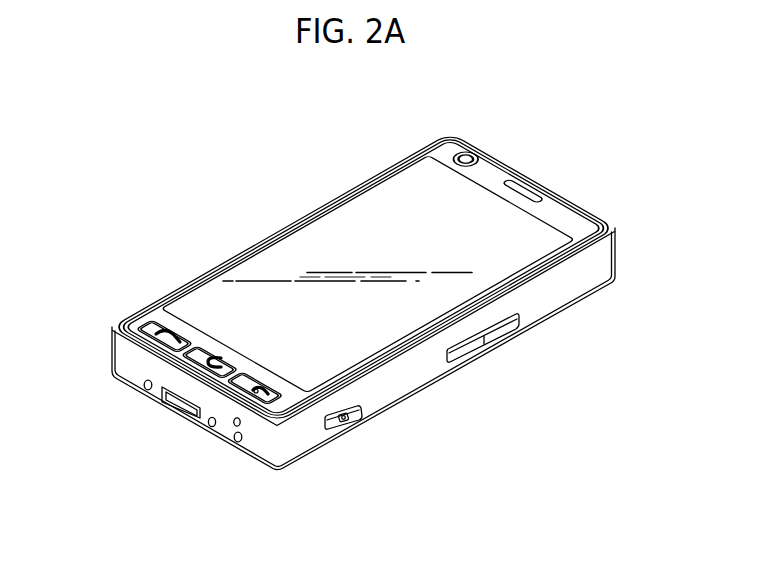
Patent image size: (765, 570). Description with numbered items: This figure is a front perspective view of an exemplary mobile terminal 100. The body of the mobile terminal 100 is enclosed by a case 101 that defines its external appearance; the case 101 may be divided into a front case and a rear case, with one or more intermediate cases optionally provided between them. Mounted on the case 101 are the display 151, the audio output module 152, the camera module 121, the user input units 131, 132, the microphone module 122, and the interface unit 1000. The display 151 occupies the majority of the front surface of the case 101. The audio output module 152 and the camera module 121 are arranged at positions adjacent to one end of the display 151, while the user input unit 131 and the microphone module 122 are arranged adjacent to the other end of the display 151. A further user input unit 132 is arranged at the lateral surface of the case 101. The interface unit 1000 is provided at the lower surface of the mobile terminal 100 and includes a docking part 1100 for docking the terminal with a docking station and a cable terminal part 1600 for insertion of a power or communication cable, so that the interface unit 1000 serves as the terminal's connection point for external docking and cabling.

The mobile terminal 100 is at (382, 323).
The case 101 is at (604, 253).
The camera module 121 is at (469, 154).
The microphone module 122 is at (243, 425).
The user input unit 131 is at (150, 323).
The user input unit 132 is at (468, 353).
The display 151 is at (295, 245).
The audio output module 152 is at (528, 188).
The interface unit 1000 is at (176, 471).
The docking part 1100 is at (208, 468).
The cable terminal part 1600 is at (180, 417).